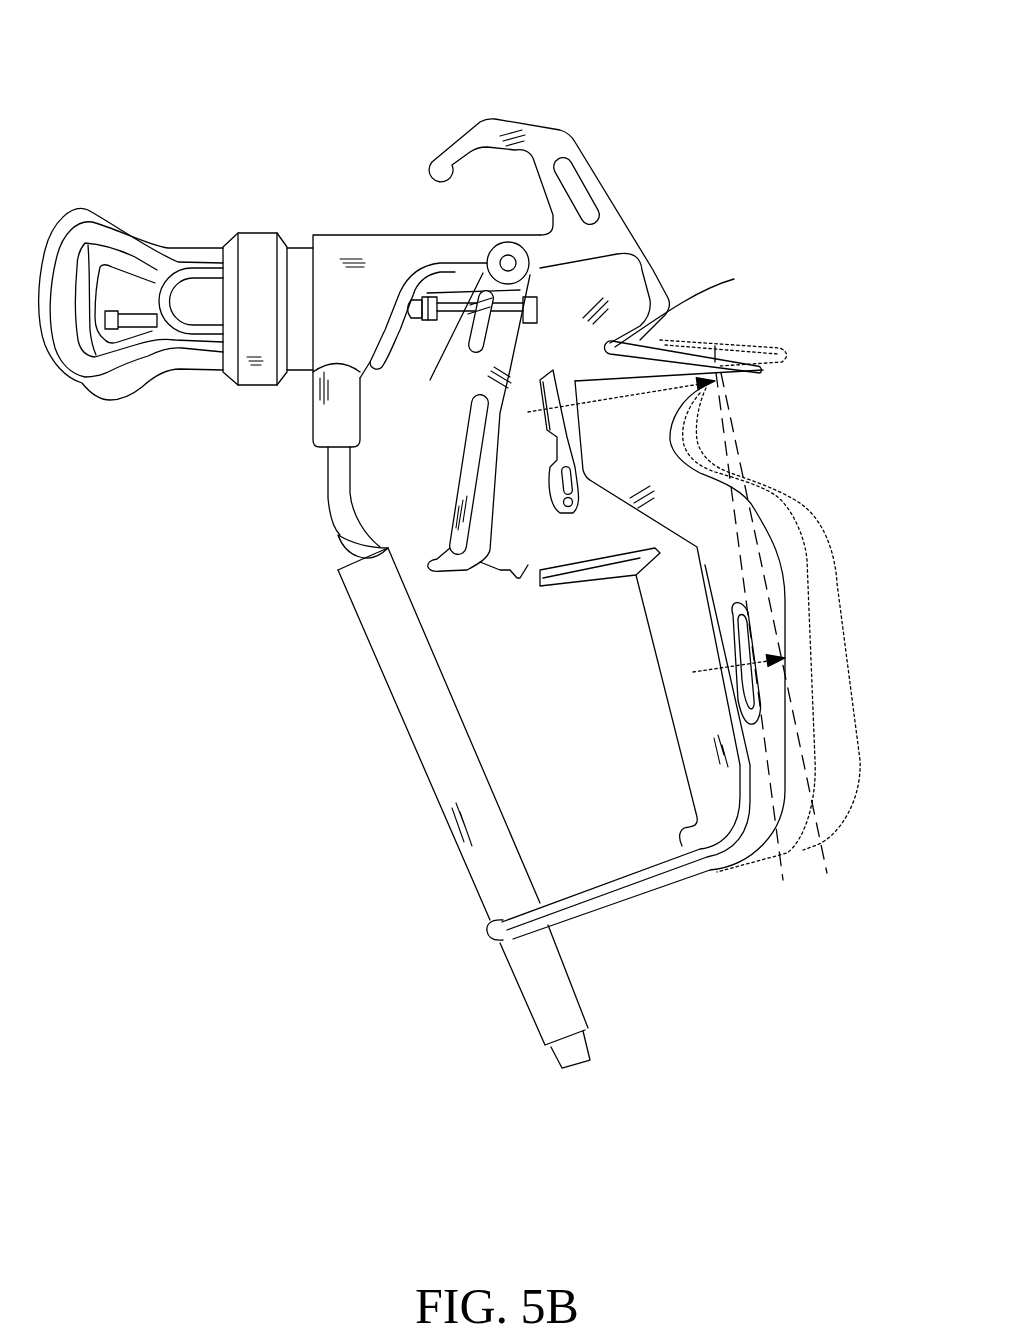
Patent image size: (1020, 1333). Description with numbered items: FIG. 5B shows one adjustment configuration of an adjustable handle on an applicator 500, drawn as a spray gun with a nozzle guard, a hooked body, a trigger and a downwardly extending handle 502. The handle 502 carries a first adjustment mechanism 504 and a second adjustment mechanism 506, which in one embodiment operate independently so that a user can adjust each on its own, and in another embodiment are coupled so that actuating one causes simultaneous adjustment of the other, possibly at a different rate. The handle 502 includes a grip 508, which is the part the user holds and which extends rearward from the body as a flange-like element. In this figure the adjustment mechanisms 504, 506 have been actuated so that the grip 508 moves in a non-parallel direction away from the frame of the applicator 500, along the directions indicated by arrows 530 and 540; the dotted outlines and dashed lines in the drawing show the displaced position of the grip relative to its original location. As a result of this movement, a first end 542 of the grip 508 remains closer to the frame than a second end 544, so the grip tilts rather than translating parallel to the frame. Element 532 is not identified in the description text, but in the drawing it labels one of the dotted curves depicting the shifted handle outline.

The applicator 500 is at (681, 69).
The handle 502 is at (730, 340).
The first adjustment mechanism 504 is at (547, 400).
The second adjustment mechanism 506 is at (743, 675).
The grip 508 is at (733, 372).
The arrow 530 is at (543, 407).
The hand guard in pivoted position 532 is at (772, 570).
The arrow 540 is at (697, 670).
The first end 542 is at (691, 304).
The second end 544 is at (720, 843).